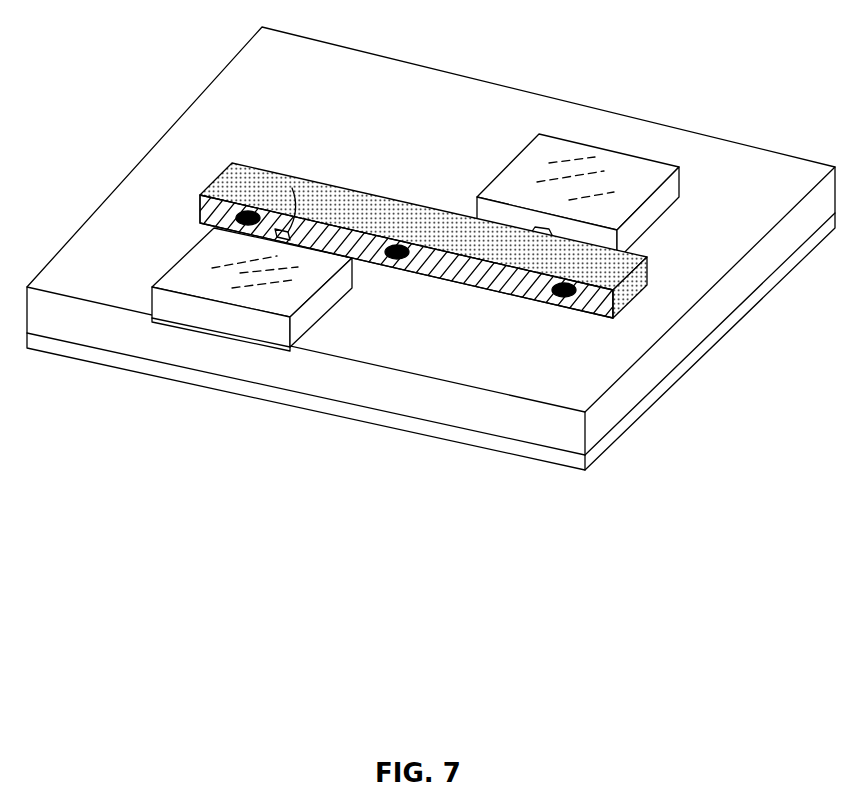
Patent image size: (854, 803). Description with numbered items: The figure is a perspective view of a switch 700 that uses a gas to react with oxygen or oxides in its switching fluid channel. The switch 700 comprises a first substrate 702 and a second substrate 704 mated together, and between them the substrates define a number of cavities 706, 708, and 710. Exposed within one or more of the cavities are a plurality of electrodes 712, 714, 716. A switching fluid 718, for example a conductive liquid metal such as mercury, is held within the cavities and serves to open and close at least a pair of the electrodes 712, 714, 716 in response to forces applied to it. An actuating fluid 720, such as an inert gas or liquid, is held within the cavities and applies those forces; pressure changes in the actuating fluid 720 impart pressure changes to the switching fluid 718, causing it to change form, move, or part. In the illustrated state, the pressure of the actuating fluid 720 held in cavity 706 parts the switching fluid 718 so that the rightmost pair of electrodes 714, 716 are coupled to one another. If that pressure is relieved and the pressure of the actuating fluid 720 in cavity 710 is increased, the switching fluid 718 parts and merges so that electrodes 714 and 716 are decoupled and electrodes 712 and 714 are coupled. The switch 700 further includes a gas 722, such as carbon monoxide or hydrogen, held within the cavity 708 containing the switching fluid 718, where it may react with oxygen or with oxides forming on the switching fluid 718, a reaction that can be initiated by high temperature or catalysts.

The switch 700 is at (425, 270).
The first substrate 702 is at (77, 223).
The second substrate 704 is at (550, 468).
The cavity 706 is at (147, 302).
The cavity 708 is at (635, 307).
The cavity 710 is at (660, 212).
The electrode 712 is at (248, 210).
The electrode 714 is at (397, 259).
The electrode 716 is at (564, 297).
The switching fluid 718 is at (213, 213).
The actuating fluid 720 is at (218, 260).
The gas 722 is at (265, 177).